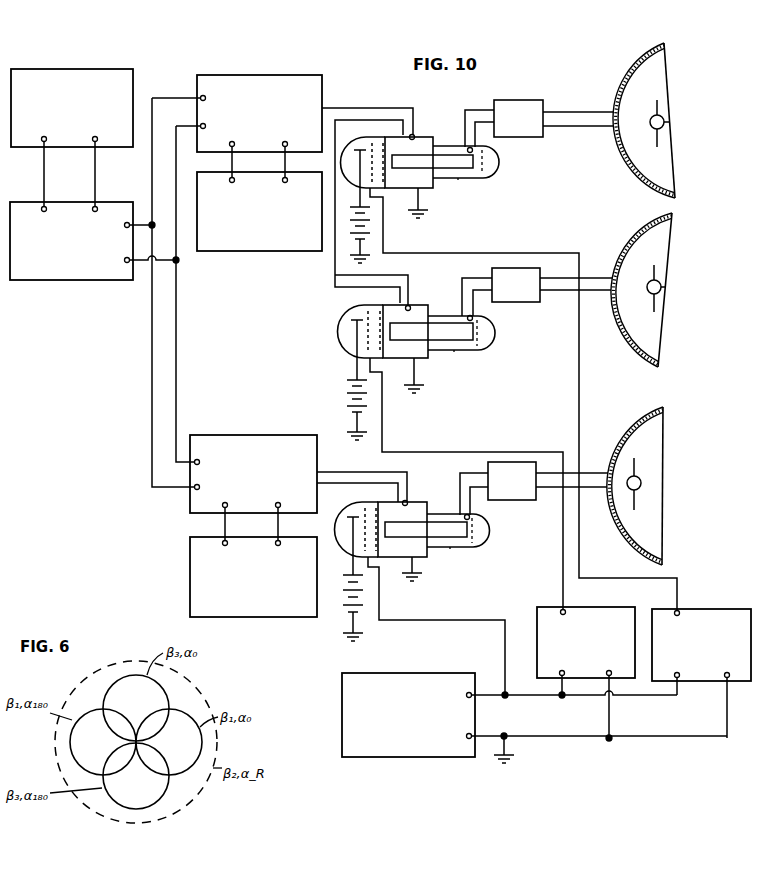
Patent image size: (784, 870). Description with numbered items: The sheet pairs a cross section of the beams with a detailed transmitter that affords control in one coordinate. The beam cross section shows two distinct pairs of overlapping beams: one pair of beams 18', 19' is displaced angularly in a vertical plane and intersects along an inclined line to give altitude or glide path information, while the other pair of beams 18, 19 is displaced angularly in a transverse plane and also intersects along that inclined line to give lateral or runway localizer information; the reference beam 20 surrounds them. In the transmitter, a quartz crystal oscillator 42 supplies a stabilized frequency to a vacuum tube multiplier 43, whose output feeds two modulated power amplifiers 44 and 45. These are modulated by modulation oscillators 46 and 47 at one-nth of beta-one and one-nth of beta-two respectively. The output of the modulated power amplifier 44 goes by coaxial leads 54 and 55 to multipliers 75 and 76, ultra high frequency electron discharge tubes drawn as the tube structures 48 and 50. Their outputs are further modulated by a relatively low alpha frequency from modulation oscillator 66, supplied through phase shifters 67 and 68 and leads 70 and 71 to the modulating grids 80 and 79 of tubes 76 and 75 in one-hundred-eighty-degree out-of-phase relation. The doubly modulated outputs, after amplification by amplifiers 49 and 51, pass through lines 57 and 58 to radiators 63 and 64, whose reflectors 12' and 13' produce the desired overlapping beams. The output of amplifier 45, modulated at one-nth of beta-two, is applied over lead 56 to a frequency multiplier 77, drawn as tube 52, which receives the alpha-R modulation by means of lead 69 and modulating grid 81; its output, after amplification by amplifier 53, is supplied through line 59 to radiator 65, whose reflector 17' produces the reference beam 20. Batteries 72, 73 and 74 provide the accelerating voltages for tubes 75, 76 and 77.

In FIG. 10, the quartz crystal oscillator 42 is at (88, 69).
In FIG. 10, the vacuum tube multiplier 43 is at (90, 280).
In FIG. 10, the modulated power amplifier 44 is at (270, 74).
In FIG. 10, the modulated power amplifier 45 is at (233, 434).
In FIG. 10, the modulation oscillator 46 is at (281, 251).
In FIG. 10, the modulation oscillator 47 is at (282, 617).
In FIG. 10, the velocity modulation tube 48 is at (435, 141).
In FIG. 10, the amplifier 49 is at (517, 100).
In FIG. 10, the velocity modulation tube 50 is at (420, 305).
In FIG. 10, the amplifier 51 is at (540, 268).
In FIG. 10, the velocity modulation tube 52 is at (424, 503).
In FIG. 10, the amplifier 53 is at (542, 497).
In FIG. 10, the coaxial lead 54 is at (362, 108).
In FIG. 10, the coaxial lead 55 is at (330, 280).
In FIG. 10, the lead 56 is at (404, 472).
In FIG. 10, the line 57 is at (562, 127).
In FIG. 10, the line 58 is at (602, 280).
In FIG. 10, the line 59 is at (596, 487).
In FIG. 10, the radiator 63 is at (670, 123).
In FIG. 10, the radiator 64 is at (665, 290).
In FIG. 10, the radiator 65 is at (641, 483).
In FIG. 10, the modulation oscillator 66 is at (439, 757).
In FIG. 10, the phase shifter 67 is at (609, 607).
In FIG. 10, the phase shifter 68 is at (721, 609).
In FIG. 10, the lead 69 is at (464, 620).
In FIG. 10, the lead 70 is at (486, 440).
In FIG. 10, the lead 71 is at (580, 368).
In FIG. 10, the battery 72 is at (369, 242).
In FIG. 10, the battery 73 is at (346, 406).
In FIG. 10, the battery 74 is at (344, 591).
In FIG. 10, the multiplier 75 is at (455, 180).
In FIG. 10, the multiplier 76 is at (454, 353).
In FIG. 10, the frequency multiplier 77 is at (440, 548).
In FIG. 10, the modulating grid 79 is at (373, 150).
In FIG. 10, the modulating grid 80 is at (367, 318).
In FIG. 10, the modulating grid 81 is at (359, 520).
In FIG. 10, the reflector 12' is at (656, 120).
In FIG. 10, the reflector 13' is at (654, 290).
In FIG. 10, the reflector 17' is at (651, 486).
In FIG. 6, the beam 18 is at (188, 742).
In FIG. 6, the beam 18' is at (127, 789).
In FIG. 6, the beam 19 is at (81, 742).
In FIG. 6, the beam 19' is at (136, 691).
In FIG. 6, the reference beam 20 is at (167, 820).